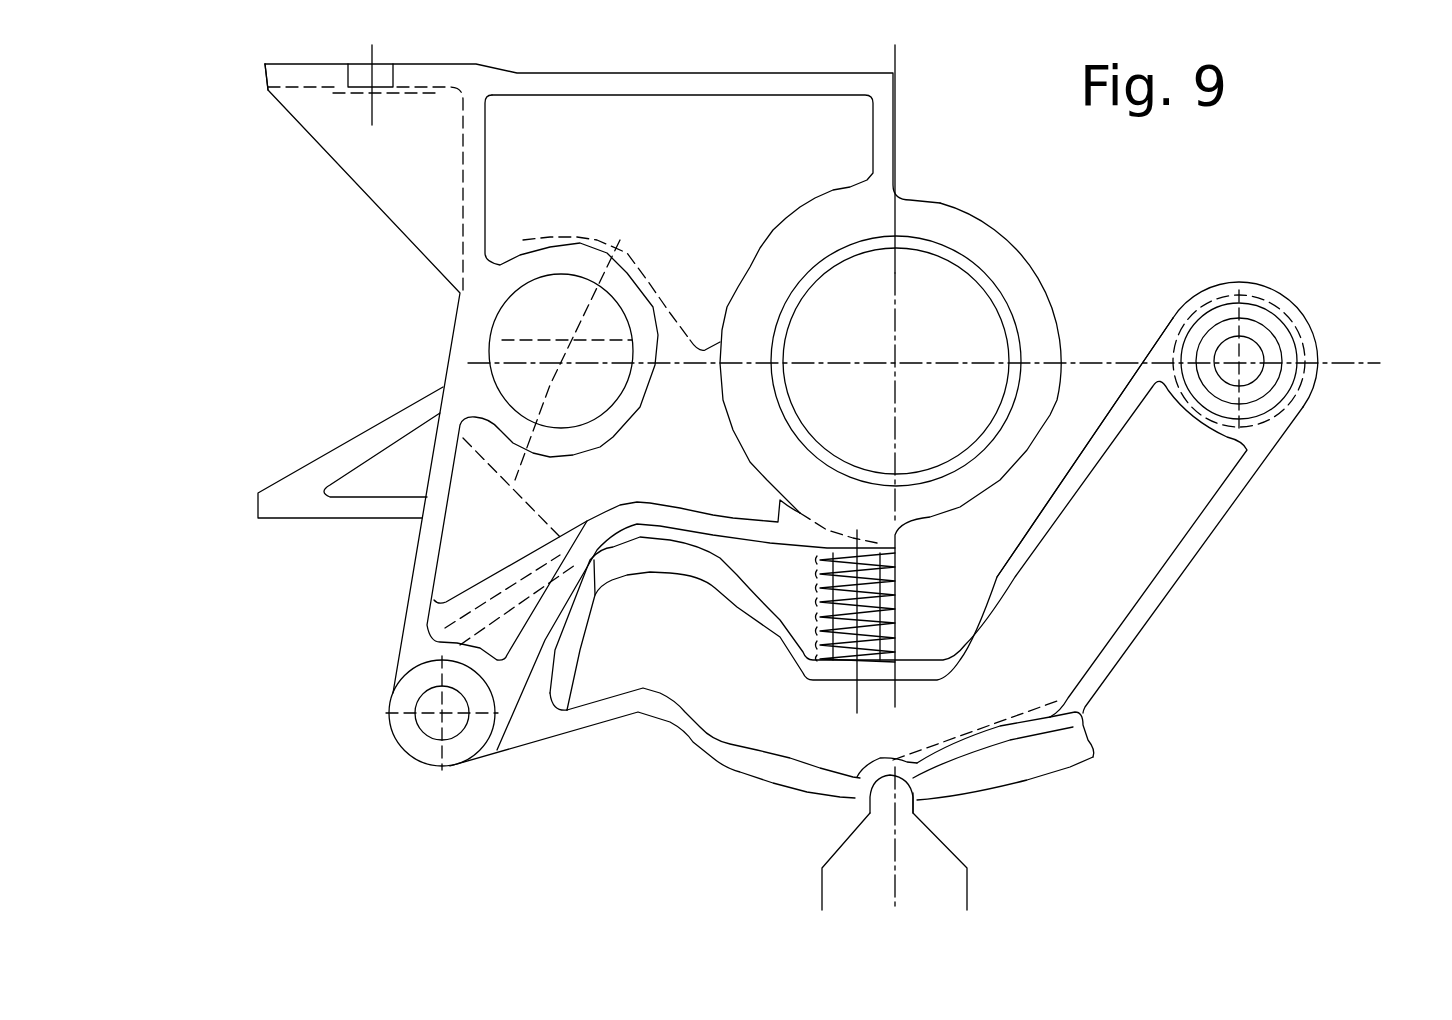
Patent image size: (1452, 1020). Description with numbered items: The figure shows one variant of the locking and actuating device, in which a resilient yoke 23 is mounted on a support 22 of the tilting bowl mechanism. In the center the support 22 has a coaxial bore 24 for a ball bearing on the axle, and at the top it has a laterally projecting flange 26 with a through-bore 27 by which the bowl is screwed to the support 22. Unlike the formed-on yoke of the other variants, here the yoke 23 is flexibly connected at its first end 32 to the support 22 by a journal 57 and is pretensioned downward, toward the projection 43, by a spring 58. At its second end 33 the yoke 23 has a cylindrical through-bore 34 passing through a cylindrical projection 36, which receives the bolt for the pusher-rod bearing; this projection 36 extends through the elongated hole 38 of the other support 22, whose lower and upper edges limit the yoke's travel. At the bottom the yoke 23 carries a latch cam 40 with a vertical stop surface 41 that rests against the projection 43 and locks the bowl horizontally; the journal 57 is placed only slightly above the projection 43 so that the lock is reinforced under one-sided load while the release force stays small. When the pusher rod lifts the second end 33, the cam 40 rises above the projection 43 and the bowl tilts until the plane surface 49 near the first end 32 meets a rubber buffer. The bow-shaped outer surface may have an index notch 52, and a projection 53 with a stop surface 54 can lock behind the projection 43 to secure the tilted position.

The support 22 is at (556, 123).
The resilient yoke 23 is at (1202, 528).
The coaxial bore 24 is at (967, 267).
The flange 26 is at (280, 68).
The through-bore 27 is at (382, 77).
The first end 32 is at (524, 733).
The second end 33 is at (1267, 439).
The cylindrical through-bore 34 is at (1254, 349).
The cylindrical projection 36 is at (1267, 300).
The elongated hole 38 is at (535, 313).
The latch cam 40 is at (860, 794).
The stop surface 41 is at (875, 797).
The projection 43 is at (907, 800).
The plane surface 49 is at (292, 502).
The index notch 52 is at (667, 720).
The projection 53 is at (1073, 750).
The stop surface 54 is at (1093, 743).
The journal 57 is at (438, 727).
The spring 58 is at (898, 600).